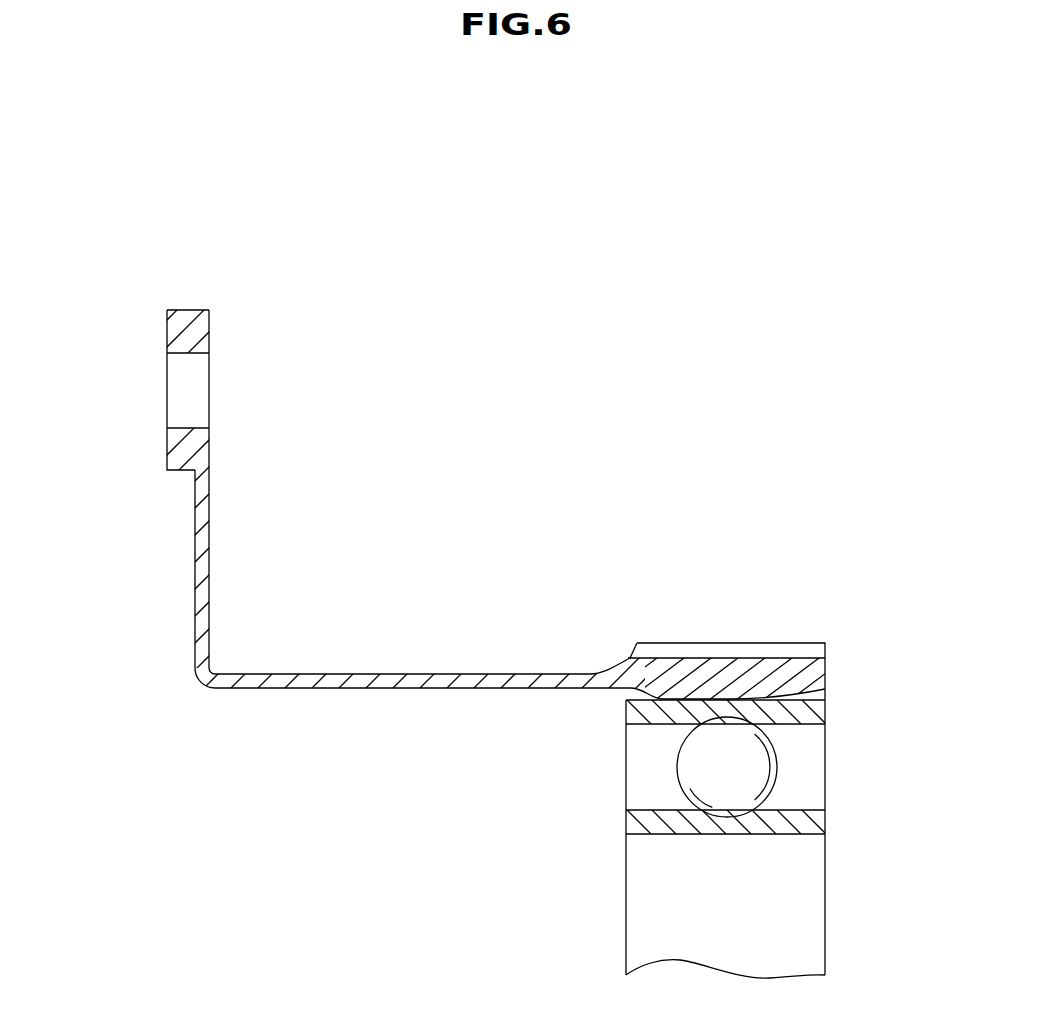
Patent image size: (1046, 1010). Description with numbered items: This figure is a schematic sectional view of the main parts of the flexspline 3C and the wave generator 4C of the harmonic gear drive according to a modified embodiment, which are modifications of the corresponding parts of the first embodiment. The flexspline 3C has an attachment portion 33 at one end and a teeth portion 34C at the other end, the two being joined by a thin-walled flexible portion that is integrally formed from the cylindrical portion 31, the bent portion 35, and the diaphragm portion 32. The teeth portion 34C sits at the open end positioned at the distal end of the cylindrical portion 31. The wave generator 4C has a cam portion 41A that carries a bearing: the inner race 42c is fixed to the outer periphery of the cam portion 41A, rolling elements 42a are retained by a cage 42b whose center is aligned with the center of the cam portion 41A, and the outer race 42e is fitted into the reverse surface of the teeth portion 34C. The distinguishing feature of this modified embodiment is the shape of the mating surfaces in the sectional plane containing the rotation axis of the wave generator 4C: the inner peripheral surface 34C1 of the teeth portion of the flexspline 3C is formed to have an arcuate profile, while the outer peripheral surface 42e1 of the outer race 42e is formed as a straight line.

The flexspline 3C is at (367, 390).
The cylindrical portion 31 is at (320, 690).
The diaphragm portion 32 is at (202, 570).
The attachment portion 33 is at (167, 321).
The teeth portion 34C is at (743, 645).
The inner peripheral surface of the teeth portion 34C1 is at (640, 706).
The bent portion 35 is at (207, 690).
The wave generator 4C is at (567, 922).
The cam portion 41A is at (823, 927).
The rolling elements 42a is at (687, 770).
The cage 42b is at (823, 770).
The inner race 42c is at (823, 816).
The outer race 42e is at (822, 713).
The outer peripheral surface of the outer race 42e1 is at (820, 699).